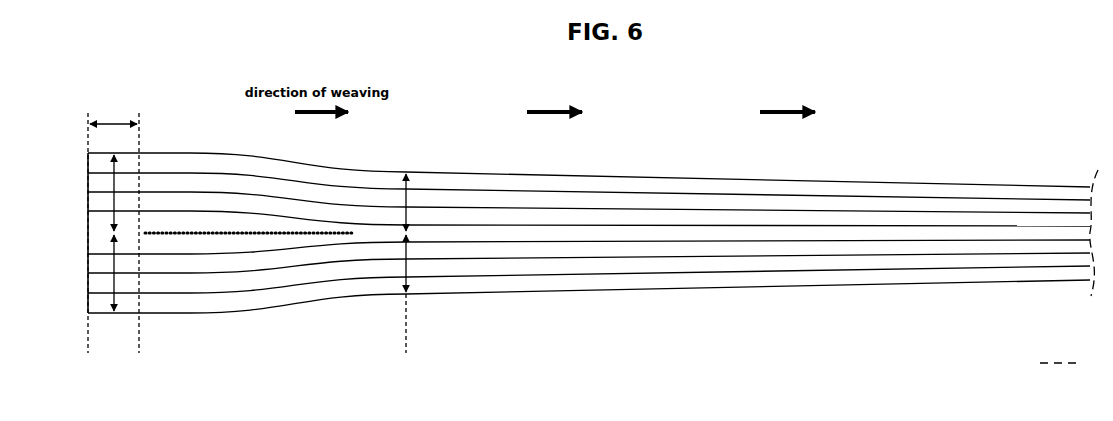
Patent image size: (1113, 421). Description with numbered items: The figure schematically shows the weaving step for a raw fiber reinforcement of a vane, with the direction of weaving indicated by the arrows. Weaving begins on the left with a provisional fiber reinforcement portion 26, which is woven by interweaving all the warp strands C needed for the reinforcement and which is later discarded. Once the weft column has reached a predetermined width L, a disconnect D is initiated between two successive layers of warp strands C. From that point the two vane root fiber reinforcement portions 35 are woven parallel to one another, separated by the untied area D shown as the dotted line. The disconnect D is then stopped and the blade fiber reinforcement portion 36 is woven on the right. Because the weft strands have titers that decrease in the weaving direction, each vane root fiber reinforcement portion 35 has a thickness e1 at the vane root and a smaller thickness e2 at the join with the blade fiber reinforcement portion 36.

The provisional fiber reinforcement portion 26 is at (139, 353).
The vane root fiber reinforcement portion 35 is at (406, 353).
The blade fiber reinforcement portion 36 is at (406, 353).
The predetermined width L is at (113, 114).
The thickness at the vane root e1 is at (113, 185).
The thickness at the join e2 is at (408, 198).
The warp strands C is at (220, 212).
The disconnect D is at (257, 233).